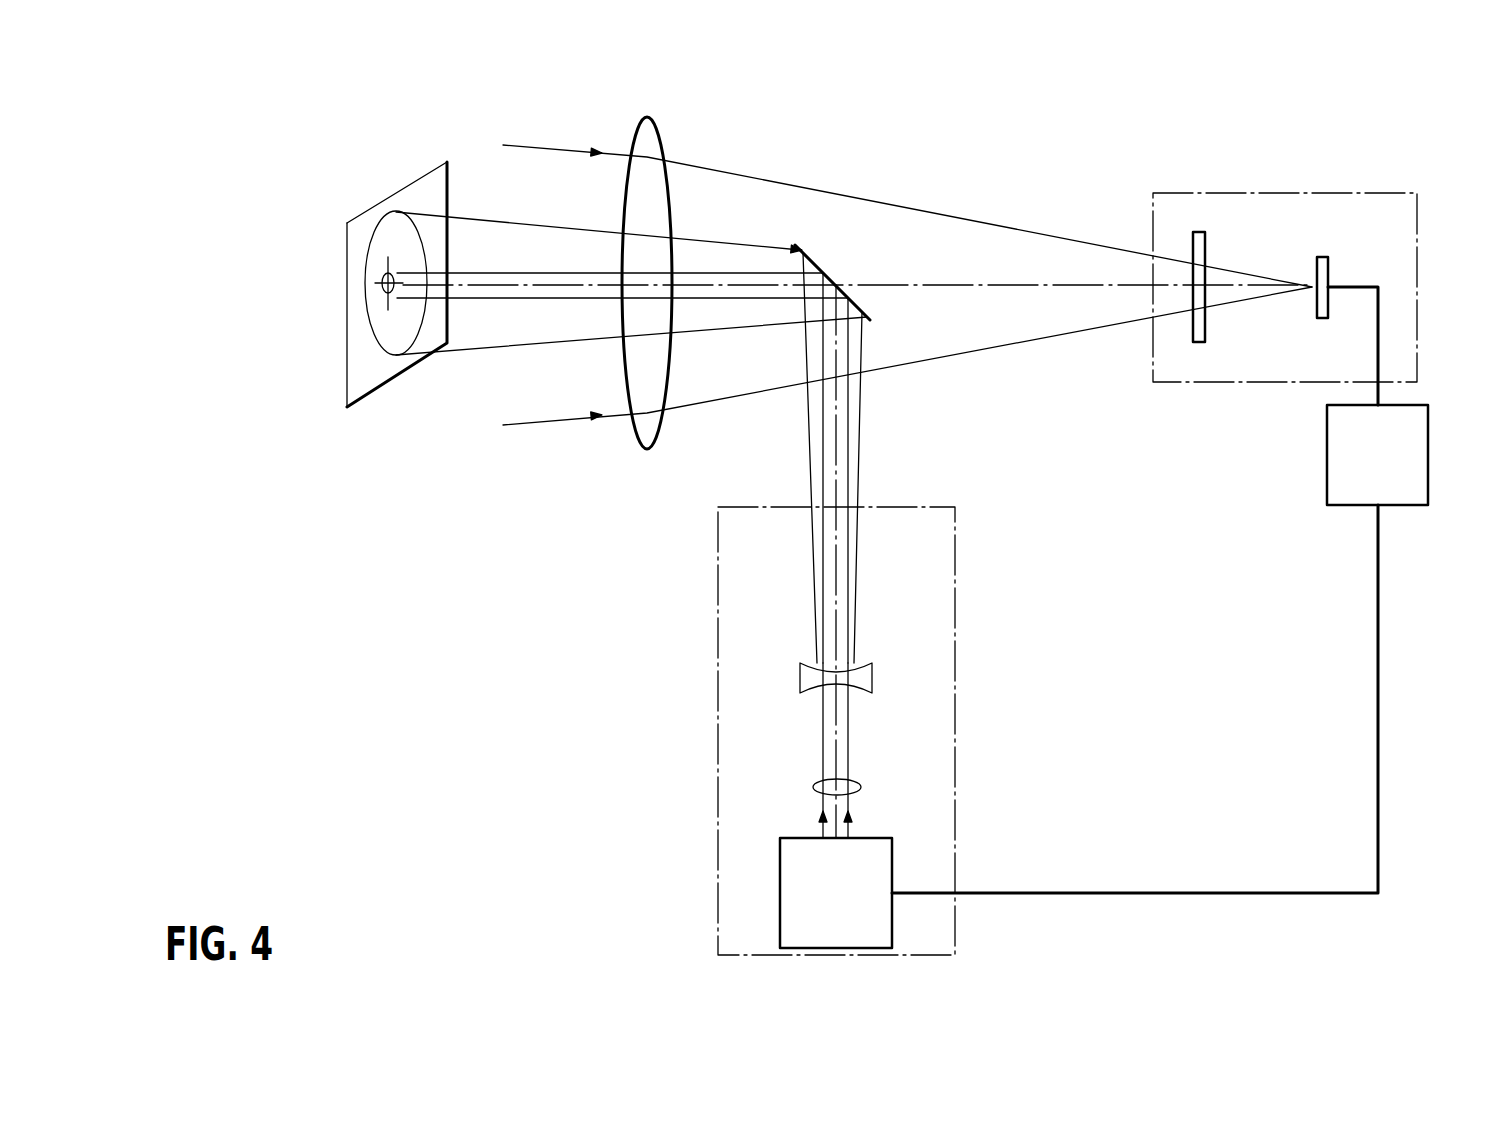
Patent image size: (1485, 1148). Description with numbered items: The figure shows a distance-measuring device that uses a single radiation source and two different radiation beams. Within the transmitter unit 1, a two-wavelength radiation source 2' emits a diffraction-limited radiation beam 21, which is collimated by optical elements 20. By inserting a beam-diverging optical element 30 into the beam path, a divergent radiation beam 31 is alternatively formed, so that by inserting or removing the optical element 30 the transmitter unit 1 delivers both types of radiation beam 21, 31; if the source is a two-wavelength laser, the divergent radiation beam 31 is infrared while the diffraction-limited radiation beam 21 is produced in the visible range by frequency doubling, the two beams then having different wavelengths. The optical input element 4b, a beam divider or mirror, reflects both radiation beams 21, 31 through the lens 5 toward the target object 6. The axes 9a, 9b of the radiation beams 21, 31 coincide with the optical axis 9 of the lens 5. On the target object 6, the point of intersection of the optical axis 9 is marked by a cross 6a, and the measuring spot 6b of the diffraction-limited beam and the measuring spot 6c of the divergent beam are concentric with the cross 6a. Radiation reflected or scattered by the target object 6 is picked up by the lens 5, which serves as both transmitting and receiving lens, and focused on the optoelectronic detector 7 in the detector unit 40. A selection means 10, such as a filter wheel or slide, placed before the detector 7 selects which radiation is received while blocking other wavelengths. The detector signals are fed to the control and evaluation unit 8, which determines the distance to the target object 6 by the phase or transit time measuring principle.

The transmitter unit 1 is at (718, 690).
The two-wavelength radiation source 2' is at (862, 893).
The optical input element 4b is at (866, 320).
The lens 5 is at (638, 133).
The target object 6 is at (410, 184).
The cross 6a is at (385, 262).
The measuring spot of the diffraction-limited radiation beam 6b is at (382, 284).
The measuring spot of the divergent radiation beam 6c is at (378, 347).
The optoelectronic detector 7 is at (1330, 263).
The control and evaluation unit 8 is at (1430, 463).
The optical axis 9 is at (957, 285).
The axis of the diffraction-limited radiation beam 9a is at (495, 290).
The axis of the divergent radiation beam 9b is at (622, 480).
The selection means 10 is at (1208, 328).
The optical elements 20 is at (862, 787).
The diffraction-limited radiation beam 21 is at (822, 746).
The beam-diverging optical element 30 is at (874, 677).
The divergent radiation beam 31 is at (857, 548).
The detector unit 40 is at (1288, 192).